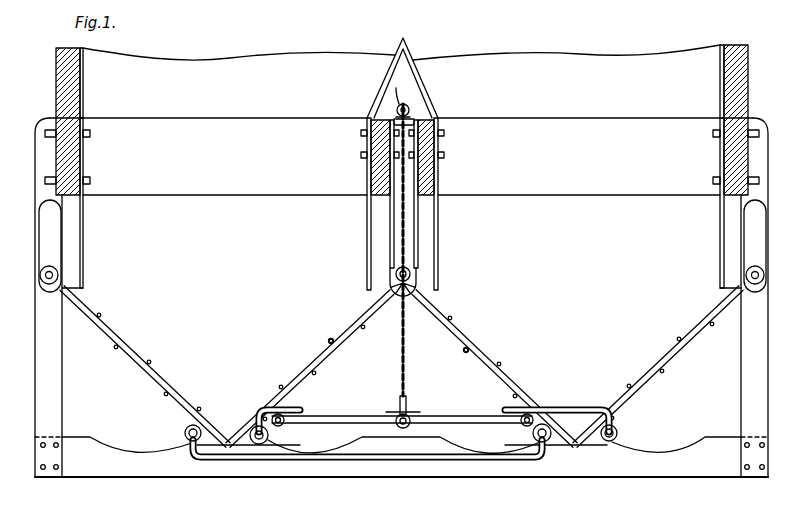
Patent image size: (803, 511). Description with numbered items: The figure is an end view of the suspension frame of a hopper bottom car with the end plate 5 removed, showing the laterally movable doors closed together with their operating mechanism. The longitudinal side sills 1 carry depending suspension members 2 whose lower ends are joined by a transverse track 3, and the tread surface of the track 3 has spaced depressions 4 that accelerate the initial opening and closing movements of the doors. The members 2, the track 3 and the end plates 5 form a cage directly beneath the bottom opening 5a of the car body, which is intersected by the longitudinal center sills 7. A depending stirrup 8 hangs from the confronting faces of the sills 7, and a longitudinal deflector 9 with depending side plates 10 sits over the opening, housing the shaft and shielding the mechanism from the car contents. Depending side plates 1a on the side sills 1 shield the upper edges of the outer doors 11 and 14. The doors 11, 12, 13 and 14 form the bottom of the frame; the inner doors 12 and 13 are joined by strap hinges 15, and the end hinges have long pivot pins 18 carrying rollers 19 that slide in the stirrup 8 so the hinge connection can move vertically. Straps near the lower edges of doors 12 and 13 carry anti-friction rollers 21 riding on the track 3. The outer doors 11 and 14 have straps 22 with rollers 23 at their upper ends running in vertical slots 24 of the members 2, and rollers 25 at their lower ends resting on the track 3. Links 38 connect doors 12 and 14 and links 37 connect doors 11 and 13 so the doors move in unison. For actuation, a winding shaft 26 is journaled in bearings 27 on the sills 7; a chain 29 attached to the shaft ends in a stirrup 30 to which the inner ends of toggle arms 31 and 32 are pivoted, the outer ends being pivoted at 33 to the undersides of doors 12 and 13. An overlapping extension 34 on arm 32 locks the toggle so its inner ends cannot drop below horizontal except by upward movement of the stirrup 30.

The longitudinal side sill 1 is at (83, 162).
The depending side plate 1a is at (84, 264).
The suspension member 2 is at (52, 365).
The transverse track 3 is at (240, 462).
The depression 4 is at (492, 456).
The end plate 5 is at (401, 241).
The bottom opening 5a is at (401, 156).
The longitudinal center sill 7 is at (380, 150).
The stirrup 8 is at (418, 250).
The longitudinal deflector 9 is at (386, 76).
The depending side plate 10 is at (367, 265).
The movable door 11 is at (152, 364).
The movable door 12 is at (332, 338).
The movable door 13 is at (500, 364).
The movable door 14 is at (660, 342).
The strap hinge 15 is at (336, 344).
The pivot pin 18 is at (410, 272).
The roller 19 is at (397, 272).
The anti-friction roller 21 is at (260, 446).
The strap 22 is at (114, 352).
The anti-friction roller 23 is at (43, 282).
The vertical slot 24 is at (50, 242).
The anti-friction roller 25 is at (184, 434).
The winding shaft 26 is at (409, 104).
The bearing 27 is at (404, 92).
The chain 29 is at (401, 332).
The stirrup 30 is at (423, 365).
The toggle arm 31 is at (326, 416).
The toggle arm 32 is at (460, 416).
The pivot 33 is at (282, 426).
The extension 34 is at (393, 414).
The link 37 is at (349, 461).
The link 38 is at (562, 402).